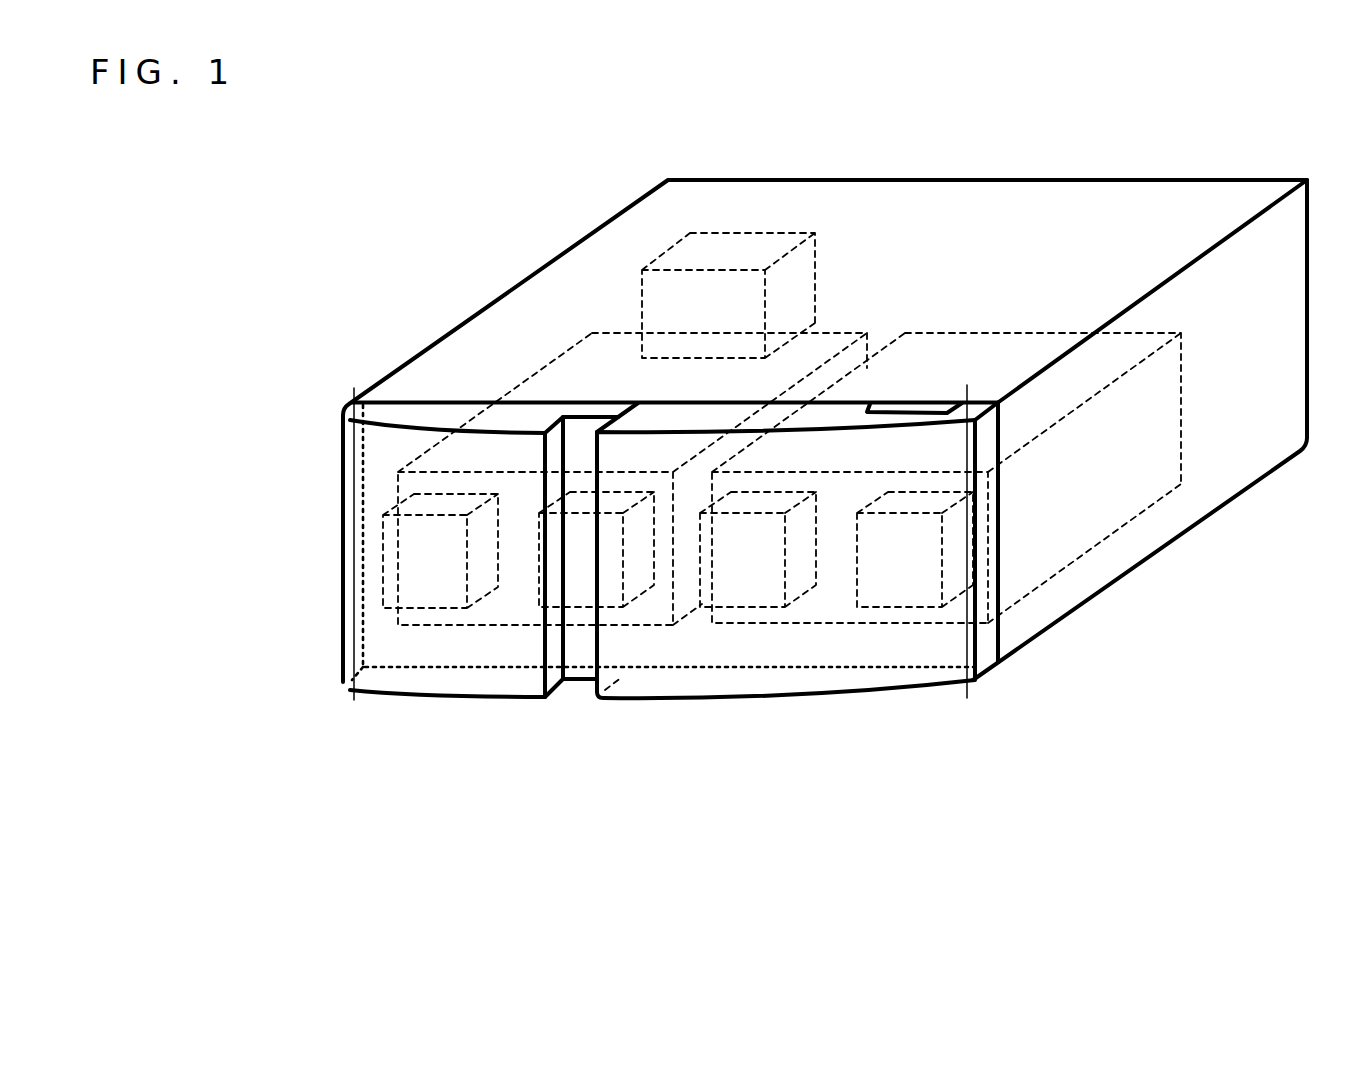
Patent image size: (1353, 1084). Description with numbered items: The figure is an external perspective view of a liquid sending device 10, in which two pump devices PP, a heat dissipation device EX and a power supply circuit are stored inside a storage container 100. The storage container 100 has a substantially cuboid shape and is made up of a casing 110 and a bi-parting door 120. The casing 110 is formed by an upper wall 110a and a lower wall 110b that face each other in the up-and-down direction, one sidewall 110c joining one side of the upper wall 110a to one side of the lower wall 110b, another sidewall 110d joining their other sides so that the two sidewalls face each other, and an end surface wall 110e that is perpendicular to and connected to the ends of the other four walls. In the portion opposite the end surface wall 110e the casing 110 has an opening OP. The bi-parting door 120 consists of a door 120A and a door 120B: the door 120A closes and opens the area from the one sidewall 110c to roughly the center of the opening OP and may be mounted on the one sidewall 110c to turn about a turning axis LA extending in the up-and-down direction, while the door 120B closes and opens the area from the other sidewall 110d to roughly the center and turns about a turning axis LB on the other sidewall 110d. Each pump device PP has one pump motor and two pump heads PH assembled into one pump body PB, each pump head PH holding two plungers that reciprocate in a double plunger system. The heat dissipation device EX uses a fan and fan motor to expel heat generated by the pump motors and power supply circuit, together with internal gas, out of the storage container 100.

The liquid sending device 10 is at (591, 157).
The storage container 100 is at (780, 873).
The casing 110 is at (1030, 615).
The upper wall 110a is at (778, 190).
The lower wall 110b is at (1095, 577).
The one sidewall 110c is at (1202, 493).
The other sidewall 110d is at (588, 272).
The end surface wall 110e is at (993, 192).
The bi-parting door 120 is at (667, 807).
The door 120A is at (680, 645).
The door 120B is at (513, 648).
The opening OP is at (736, 643).
The heat dissipation device EX is at (800, 224).
The pump device PP is at (841, 330).
The pump body PB is at (517, 390).
The pump head PH is at (410, 590).
The turning axis LB is at (352, 693).
The turning axis LA is at (966, 694).